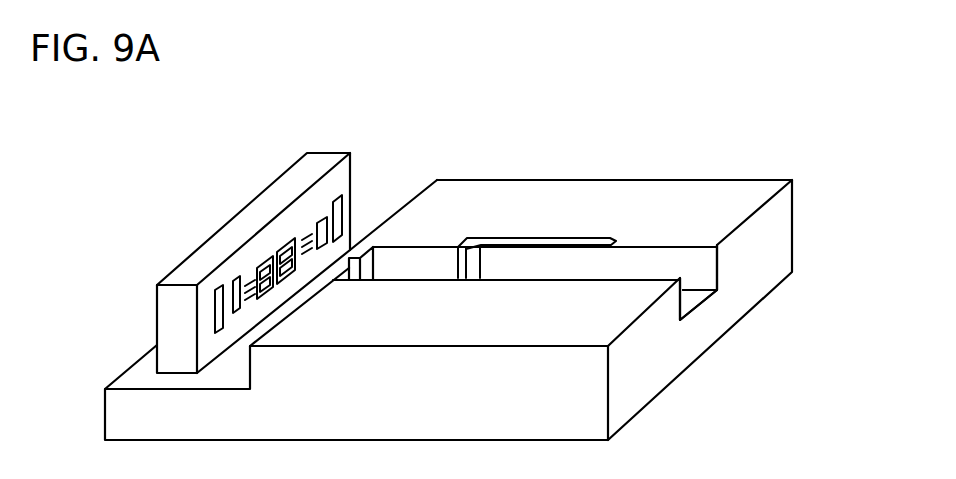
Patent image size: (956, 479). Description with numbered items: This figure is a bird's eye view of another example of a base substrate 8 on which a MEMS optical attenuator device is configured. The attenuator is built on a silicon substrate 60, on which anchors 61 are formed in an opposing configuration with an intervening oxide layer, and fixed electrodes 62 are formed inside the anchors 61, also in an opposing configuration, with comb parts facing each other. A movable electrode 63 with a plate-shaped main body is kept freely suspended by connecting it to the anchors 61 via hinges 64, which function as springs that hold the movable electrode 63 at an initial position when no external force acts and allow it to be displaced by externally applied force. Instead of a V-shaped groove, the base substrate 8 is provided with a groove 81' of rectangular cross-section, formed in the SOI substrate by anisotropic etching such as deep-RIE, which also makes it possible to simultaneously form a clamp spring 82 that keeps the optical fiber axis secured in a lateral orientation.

The base substrate 8 is at (727, 197).
The silicon substrate 60 is at (343, 153).
The anchor 61 is at (220, 287).
The fixed electrode 62 is at (240, 277).
The movable electrode 63 is at (285, 244).
The hinge 64 is at (258, 262).
The groove 81' is at (757, 290).
The clamp spring 82 is at (507, 254).